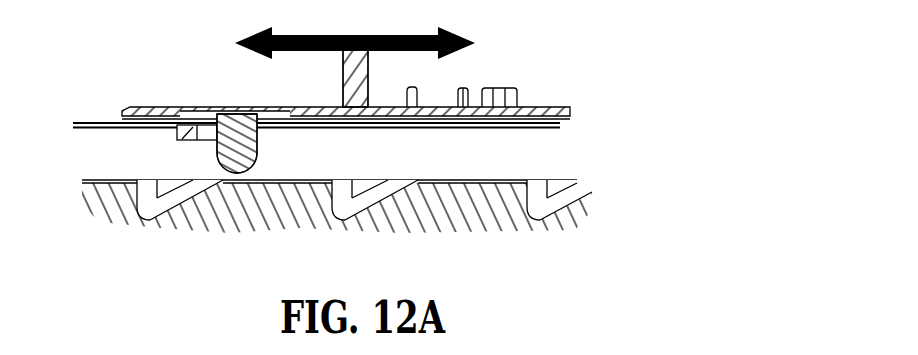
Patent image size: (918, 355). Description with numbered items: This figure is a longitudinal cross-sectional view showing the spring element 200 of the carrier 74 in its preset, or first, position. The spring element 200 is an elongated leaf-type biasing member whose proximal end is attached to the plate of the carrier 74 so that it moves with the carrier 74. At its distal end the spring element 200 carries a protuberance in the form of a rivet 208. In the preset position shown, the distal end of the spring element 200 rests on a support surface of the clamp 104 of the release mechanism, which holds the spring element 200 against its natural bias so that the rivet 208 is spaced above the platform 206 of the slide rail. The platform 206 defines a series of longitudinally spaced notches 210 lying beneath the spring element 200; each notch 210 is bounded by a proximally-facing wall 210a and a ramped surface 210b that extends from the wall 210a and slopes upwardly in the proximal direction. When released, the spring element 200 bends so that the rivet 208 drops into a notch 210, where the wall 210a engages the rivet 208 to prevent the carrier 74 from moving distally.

The carrier 74 is at (132, 107).
The clamp 104 is at (193, 135).
The spring element 200 is at (483, 120).
The platform 206 is at (510, 192).
The rivet 208 is at (230, 138).
The notches 210 is at (317, 143).
The proximally-facing wall 210a is at (145, 188).
The ramped surface 210b is at (165, 220).